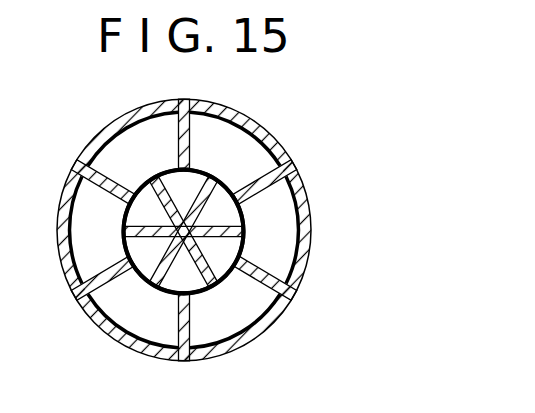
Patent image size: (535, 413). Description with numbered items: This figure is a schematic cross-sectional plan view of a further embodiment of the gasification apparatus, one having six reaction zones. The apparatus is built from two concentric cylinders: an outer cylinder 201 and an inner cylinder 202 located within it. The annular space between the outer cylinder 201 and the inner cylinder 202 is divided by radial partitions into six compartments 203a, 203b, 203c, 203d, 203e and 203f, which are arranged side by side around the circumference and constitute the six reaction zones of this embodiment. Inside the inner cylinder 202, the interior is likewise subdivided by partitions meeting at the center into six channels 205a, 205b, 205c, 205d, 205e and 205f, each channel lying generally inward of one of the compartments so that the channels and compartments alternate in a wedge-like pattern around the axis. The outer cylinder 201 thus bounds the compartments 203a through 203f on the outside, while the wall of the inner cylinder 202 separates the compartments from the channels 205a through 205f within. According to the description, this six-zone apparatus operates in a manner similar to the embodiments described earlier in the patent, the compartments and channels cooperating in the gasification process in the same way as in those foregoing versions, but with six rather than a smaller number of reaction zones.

The outer cylinder 201 is at (273, 145).
The inner cylinder 202 is at (243, 218).
The compartment 203a is at (138, 317).
The compartment 203b is at (92, 265).
The compartment 203c is at (149, 130).
The compartment 203d is at (217, 130).
The compartment 203e is at (282, 257).
The compartment 203f is at (257, 302).
The channel 205a is at (147, 250).
The channel 205b is at (79, 196).
The channel 205c is at (177, 187).
The channel 205d is at (220, 213).
The channel 205e is at (215, 245).
The channel 205f is at (195, 282).